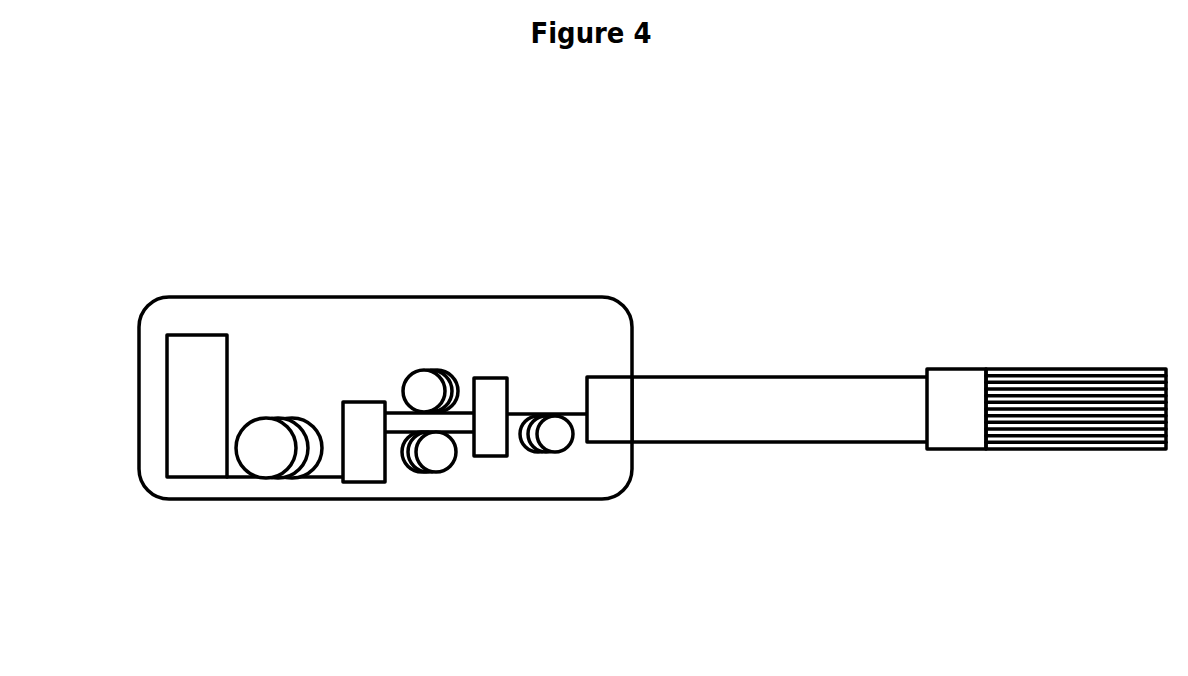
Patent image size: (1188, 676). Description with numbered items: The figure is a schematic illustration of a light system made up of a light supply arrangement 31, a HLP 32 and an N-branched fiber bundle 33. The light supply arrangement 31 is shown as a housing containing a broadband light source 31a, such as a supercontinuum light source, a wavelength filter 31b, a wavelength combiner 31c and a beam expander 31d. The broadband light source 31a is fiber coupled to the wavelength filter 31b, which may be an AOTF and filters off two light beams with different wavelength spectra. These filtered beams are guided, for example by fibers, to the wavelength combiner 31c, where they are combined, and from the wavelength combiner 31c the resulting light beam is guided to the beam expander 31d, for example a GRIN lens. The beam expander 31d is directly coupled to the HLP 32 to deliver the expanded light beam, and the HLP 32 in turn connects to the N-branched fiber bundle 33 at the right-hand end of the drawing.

The light supply arrangement 31 is at (325, 272).
The broadband light source 31a is at (197, 433).
The wavelength filter 31b is at (377, 445).
The wavelength combiner 31c is at (491, 432).
The beam expander 31d is at (620, 413).
The HLP 32 is at (778, 335).
The N-branched fiber bundle 33 is at (1050, 349).